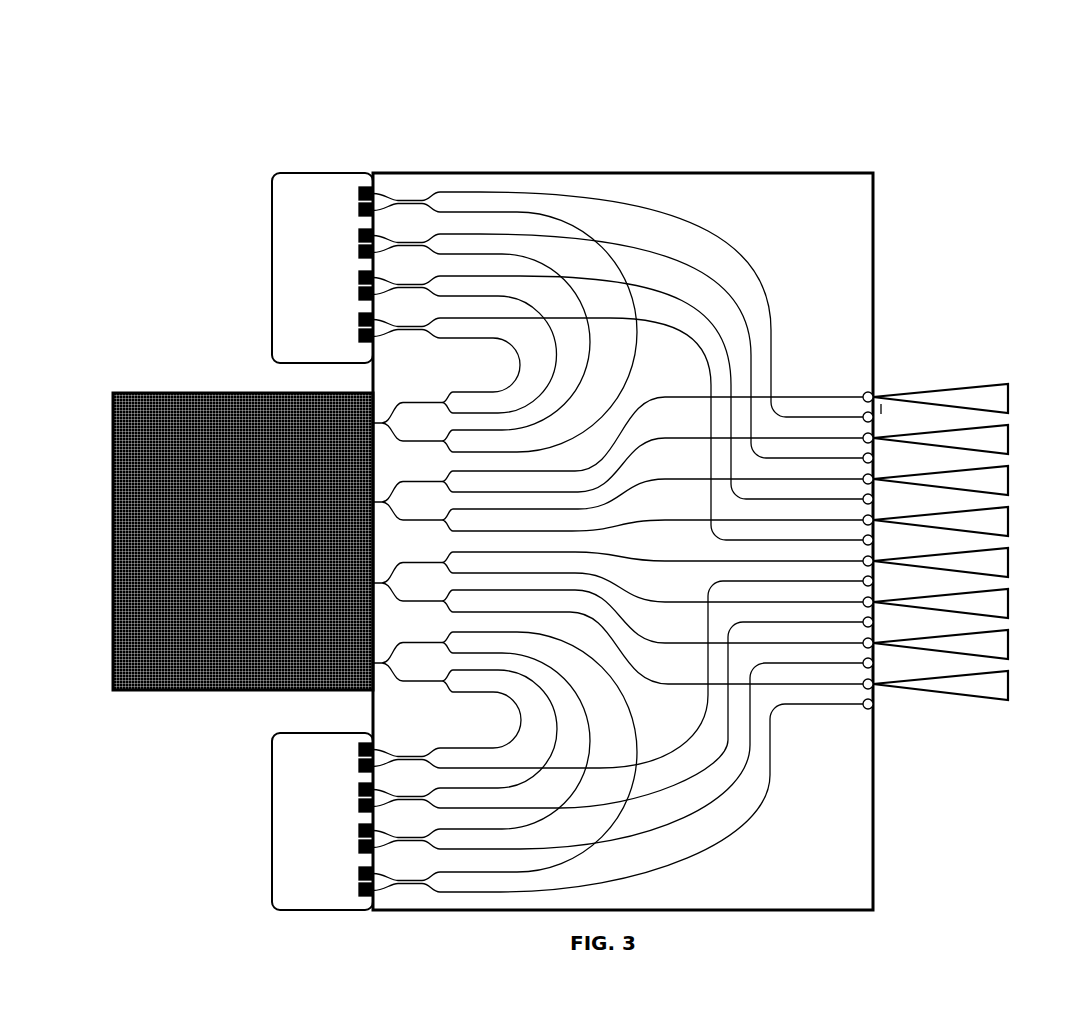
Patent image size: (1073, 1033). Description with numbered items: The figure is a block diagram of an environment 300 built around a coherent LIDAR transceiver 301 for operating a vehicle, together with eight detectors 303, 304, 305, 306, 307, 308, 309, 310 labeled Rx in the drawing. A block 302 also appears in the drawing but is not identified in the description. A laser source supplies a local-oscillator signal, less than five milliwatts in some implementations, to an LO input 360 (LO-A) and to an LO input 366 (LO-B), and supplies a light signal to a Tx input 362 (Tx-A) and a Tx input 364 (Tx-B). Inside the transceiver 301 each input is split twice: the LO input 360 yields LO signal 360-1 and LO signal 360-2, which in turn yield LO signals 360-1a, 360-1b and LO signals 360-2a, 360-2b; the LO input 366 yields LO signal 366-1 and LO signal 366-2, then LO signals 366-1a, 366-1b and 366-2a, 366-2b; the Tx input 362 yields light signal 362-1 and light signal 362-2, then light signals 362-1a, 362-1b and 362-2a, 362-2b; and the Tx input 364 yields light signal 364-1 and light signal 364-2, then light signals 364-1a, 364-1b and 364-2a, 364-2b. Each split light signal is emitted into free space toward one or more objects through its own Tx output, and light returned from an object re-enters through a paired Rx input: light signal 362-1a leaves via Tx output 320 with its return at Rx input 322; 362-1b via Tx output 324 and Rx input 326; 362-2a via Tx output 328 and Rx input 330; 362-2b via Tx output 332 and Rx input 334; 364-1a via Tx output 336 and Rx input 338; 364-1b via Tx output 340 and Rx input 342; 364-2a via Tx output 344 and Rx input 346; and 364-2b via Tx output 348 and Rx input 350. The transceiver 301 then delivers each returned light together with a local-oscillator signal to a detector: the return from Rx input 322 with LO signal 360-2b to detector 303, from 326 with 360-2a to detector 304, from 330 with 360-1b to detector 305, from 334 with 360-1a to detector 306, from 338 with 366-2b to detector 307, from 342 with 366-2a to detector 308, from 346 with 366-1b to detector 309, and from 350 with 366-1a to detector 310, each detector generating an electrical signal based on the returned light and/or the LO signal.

The environment 300 is at (208, 93).
The coherent LIDAR transceiver 301 is at (525, 168).
The fiber array 302 is at (113, 422).
The detector 303 is at (338, 201).
The detector 304 is at (338, 243).
The detector 305 is at (338, 285).
The detector 306 is at (338, 331).
The detector 307 is at (338, 757).
The detector 308 is at (338, 797).
The detector 309 is at (338, 838).
The detector 310 is at (338, 885).
The Tx output 320 is at (922, 397).
The Rx input 322 is at (854, 411).
The Tx output 324 is at (922, 438).
The Rx input 326 is at (854, 452).
The Tx output 328 is at (922, 479).
The Rx input 330 is at (854, 493).
The Tx output 332 is at (922, 520).
The Rx input 334 is at (854, 534).
The Tx output 336 is at (922, 561).
The Rx input 338 is at (854, 575).
The Tx output 340 is at (922, 602).
The Rx input 342 is at (854, 616).
The Tx output 344 is at (922, 643).
The Rx input 346 is at (854, 657).
The Tx output 348 is at (922, 684).
The Rx input 350 is at (854, 698).
The LO input 360 is at (462, 332).
The LO signal 360-1 is at (428, 398).
The LO signal 360-2 is at (428, 436).
The LO signal 360-1a is at (480, 365).
The LO signal 360-1b is at (498, 354).
The LO signal 360-2a is at (515, 342).
The LO signal 360-2b is at (538, 332).
The Tx input 362 is at (578, 464).
The light signal 362-1 is at (428, 477).
The light signal 362-2 is at (428, 515).
The light signal 362-1a is at (660, 434).
The light signal 362-1b is at (660, 465).
The light signal 362-2a is at (660, 494).
The light signal 362-2b is at (660, 523).
The Tx input 364 is at (578, 607).
The light signal 364-1 is at (428, 557).
The light signal 364-2 is at (428, 596).
The light signal 364-1a is at (660, 546).
The light signal 364-1b is at (660, 579).
The light signal 364-2a is at (660, 608).
The light signal 364-2b is at (660, 640).
The LO input 366 is at (462, 743).
The LO signal 366-1 is at (428, 638).
The LO signal 366-2 is at (428, 676).
The LO signal 366-1a is at (538, 743).
The LO signal 366-1b is at (515, 732).
The LO signal 366-2a is at (498, 721).
The LO signal 366-2b is at (480, 713).